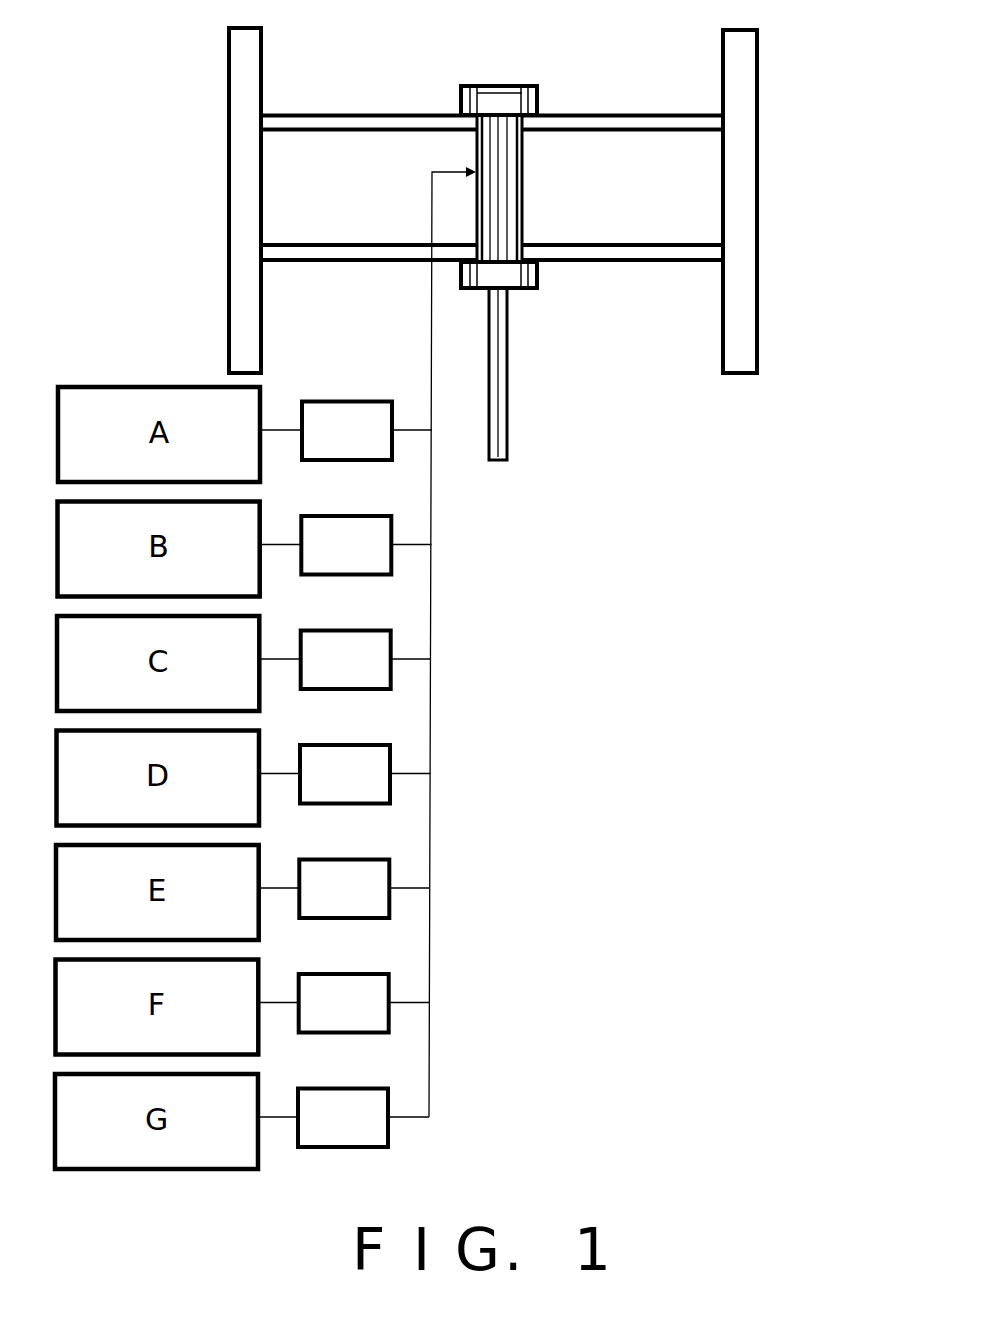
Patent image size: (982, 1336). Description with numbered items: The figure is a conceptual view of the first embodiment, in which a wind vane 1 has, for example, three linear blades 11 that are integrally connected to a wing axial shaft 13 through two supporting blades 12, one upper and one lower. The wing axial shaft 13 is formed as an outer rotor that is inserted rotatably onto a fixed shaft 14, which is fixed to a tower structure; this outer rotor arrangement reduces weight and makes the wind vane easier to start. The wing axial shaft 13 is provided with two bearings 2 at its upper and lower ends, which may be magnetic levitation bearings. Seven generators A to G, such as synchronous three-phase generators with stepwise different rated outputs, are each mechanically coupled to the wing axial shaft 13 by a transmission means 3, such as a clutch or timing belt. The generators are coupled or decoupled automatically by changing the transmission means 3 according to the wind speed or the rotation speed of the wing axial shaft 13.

The wind vane 1 is at (588, 80).
The linear blade 11 is at (228, 80).
The supporting blade 12 is at (290, 113).
The wing axial shaft 13 is at (522, 198).
The fixed shaft 14 is at (507, 348).
The bearing 2 is at (468, 86).
The transmission means 3 is at (342, 402).